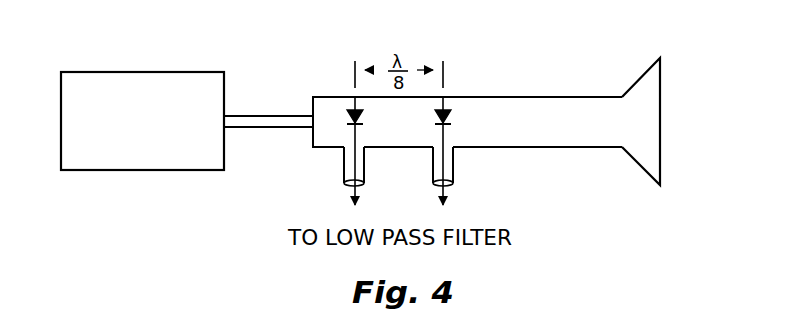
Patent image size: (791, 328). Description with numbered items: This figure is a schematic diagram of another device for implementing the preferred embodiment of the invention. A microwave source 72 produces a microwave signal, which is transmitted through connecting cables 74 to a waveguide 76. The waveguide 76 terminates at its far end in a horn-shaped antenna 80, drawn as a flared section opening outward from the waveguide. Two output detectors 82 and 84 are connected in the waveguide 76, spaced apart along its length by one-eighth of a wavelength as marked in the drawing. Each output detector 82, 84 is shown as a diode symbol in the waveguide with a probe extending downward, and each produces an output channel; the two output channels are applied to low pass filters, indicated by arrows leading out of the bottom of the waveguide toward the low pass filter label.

The microwave source 72 is at (212, 72).
The connecting cables 74 is at (283, 116).
The waveguide 76 is at (559, 97).
The horn antenna 80 is at (650, 65).
The output detector 82 is at (355, 110).
The output detector 84 is at (447, 118).